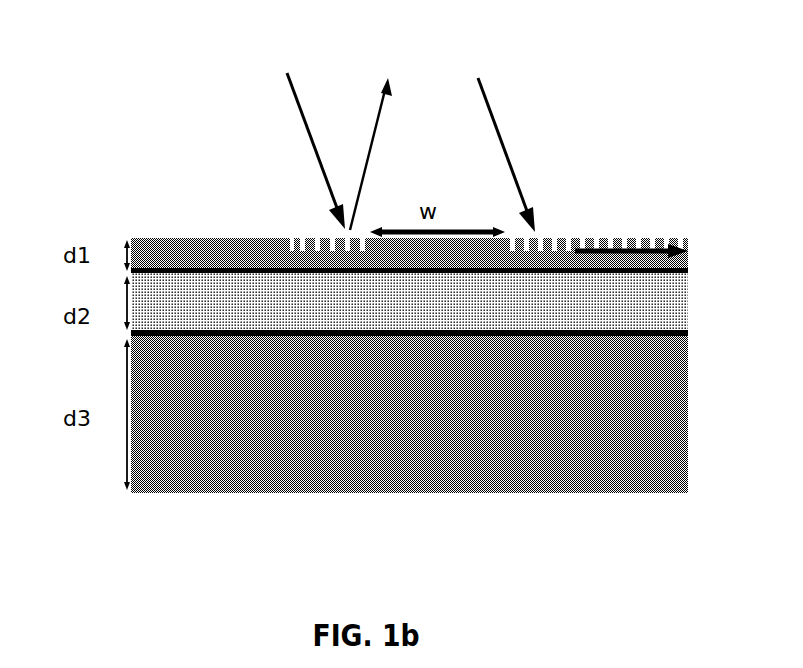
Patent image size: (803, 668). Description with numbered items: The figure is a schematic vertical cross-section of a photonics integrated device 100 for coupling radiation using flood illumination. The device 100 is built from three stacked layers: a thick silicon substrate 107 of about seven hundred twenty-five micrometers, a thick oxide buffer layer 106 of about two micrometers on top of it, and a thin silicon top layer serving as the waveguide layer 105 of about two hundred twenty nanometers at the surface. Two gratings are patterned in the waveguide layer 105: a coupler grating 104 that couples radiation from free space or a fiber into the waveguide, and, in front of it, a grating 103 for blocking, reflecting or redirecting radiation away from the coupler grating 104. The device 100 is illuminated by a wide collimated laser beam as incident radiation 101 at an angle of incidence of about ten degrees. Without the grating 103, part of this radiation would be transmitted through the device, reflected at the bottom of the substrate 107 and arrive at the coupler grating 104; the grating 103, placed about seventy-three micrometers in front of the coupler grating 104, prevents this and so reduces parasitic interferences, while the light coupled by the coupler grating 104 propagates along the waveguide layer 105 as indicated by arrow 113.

The photonics integrated device 100 is at (134, 130).
The incident radiation 101 is at (307, 127).
The grating for blocking, reflecting or redirecting radiation away from the coupler 103 is at (307, 238).
The coupler grating 104 is at (572, 230).
The waveguide layer 105 is at (222, 248).
The oxide buffer layer 106 is at (270, 300).
The silicon substrate 107 is at (350, 372).
The guided light 113 is at (646, 250).